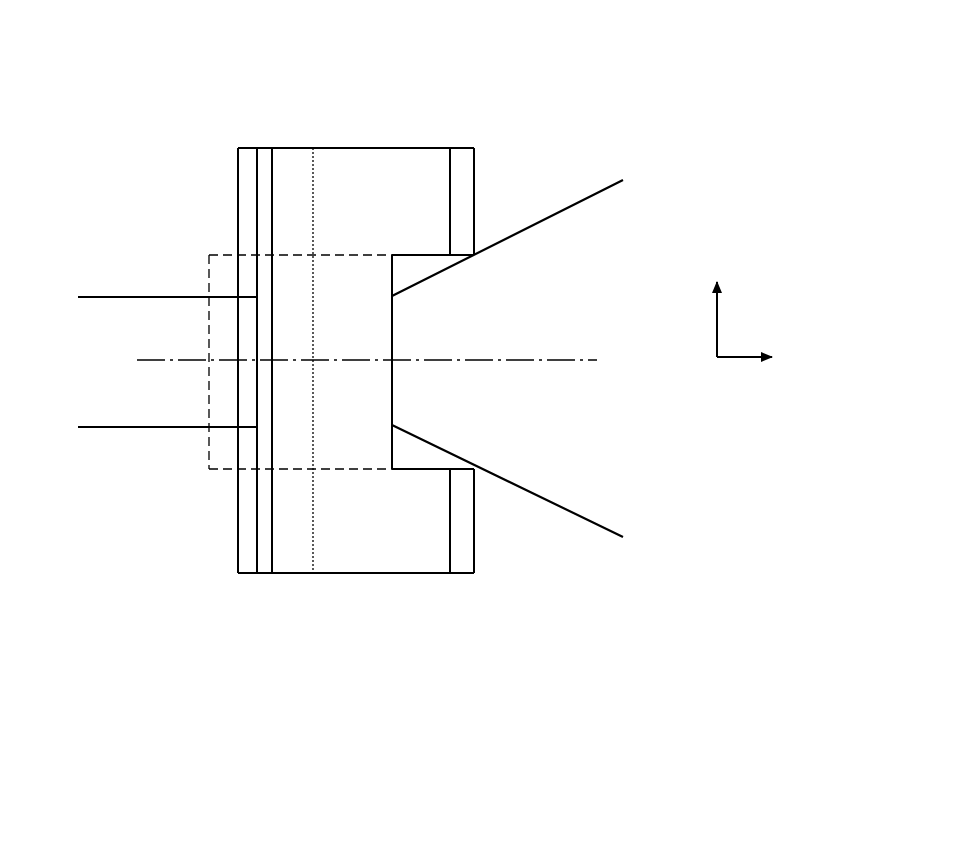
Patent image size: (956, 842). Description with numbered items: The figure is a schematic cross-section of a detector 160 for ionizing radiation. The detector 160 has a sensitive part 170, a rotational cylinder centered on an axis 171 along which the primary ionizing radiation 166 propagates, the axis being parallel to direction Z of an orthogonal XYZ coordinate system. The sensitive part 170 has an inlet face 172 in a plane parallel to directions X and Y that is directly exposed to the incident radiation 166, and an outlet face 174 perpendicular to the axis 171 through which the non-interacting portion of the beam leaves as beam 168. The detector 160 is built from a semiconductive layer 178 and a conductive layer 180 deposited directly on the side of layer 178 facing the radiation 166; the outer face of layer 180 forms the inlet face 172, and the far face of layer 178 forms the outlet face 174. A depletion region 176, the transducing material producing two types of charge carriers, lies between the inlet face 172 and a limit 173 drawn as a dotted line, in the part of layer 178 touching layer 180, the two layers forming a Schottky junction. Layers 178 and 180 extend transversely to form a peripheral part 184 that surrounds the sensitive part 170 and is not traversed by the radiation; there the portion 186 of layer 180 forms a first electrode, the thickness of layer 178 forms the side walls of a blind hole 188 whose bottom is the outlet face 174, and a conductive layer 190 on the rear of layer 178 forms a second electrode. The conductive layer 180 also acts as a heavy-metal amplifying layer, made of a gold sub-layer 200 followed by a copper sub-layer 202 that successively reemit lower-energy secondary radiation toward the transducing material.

The detector 160 is at (166, 106).
The primary ionizing radiation 166 is at (163, 297).
The beam 168 is at (592, 194).
The sensitive part 170 is at (214, 250).
The axis 171 is at (543, 358).
The inlet face 172 is at (234, 457).
The limit 173 is at (313, 203).
The outlet face 174 is at (398, 409).
The depletion region 176 is at (285, 375).
The semiconductive layer 178 is at (450, 140).
The conductive layer 180 is at (238, 438).
The peripheral part 184 is at (436, 180).
The portion of the conductive layer 186 is at (238, 152).
The blind hole 188 is at (427, 256).
The conductive layer 190 is at (462, 177).
The sub-layer 200 is at (240, 573).
The sub-layer 202 is at (272, 573).